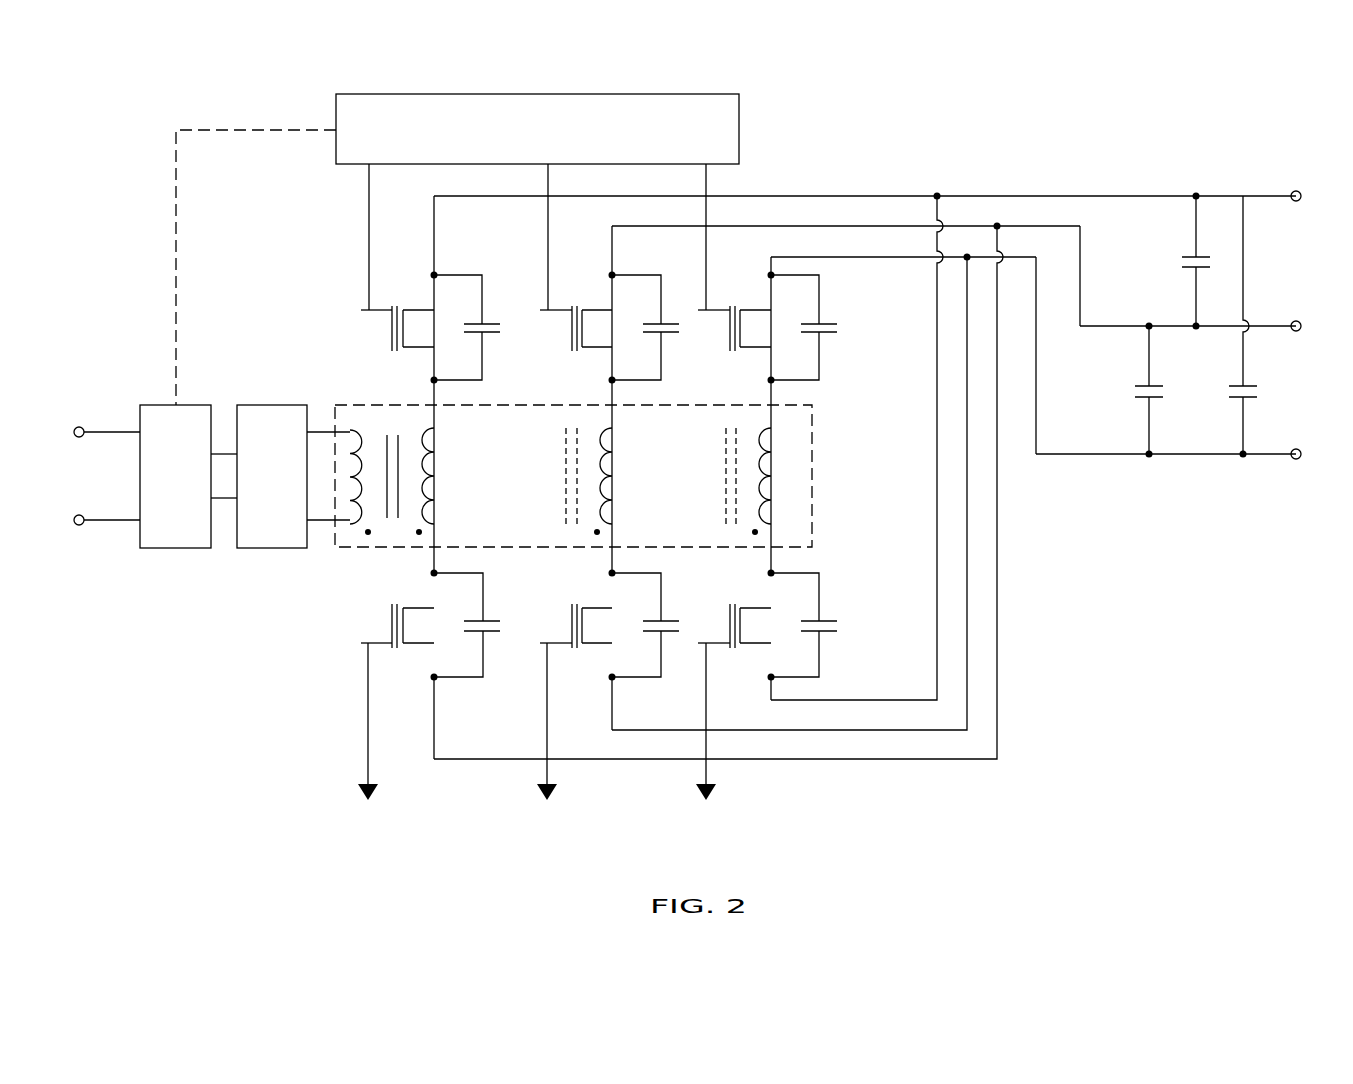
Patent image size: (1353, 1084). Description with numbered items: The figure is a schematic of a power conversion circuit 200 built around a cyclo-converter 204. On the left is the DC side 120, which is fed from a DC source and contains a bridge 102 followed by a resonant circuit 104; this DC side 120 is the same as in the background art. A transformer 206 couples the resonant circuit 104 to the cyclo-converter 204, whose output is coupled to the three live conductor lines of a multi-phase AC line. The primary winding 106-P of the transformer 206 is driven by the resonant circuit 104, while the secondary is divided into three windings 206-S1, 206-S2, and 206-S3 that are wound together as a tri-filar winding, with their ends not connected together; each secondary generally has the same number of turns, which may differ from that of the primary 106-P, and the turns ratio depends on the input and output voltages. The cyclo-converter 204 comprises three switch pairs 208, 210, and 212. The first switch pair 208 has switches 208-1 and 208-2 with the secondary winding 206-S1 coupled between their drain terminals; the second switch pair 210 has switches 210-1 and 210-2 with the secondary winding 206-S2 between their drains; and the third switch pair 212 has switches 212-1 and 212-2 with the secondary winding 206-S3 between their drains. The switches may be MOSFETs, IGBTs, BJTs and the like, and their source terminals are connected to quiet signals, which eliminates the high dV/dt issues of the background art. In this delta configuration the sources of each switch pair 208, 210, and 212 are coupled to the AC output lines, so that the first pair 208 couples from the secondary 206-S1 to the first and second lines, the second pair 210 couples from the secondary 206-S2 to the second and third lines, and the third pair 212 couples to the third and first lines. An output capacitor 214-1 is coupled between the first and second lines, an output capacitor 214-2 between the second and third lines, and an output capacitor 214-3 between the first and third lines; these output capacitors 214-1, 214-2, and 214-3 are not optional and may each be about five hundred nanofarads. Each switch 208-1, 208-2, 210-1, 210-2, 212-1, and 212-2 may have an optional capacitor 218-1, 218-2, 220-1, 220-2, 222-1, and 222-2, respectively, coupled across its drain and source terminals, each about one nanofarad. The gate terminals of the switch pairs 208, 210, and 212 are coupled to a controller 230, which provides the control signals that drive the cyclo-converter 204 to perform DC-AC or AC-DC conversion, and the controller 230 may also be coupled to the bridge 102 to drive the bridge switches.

The bridge 102 is at (192, 485).
The resonant circuit 104 is at (288, 485).
The DC side 120 is at (307, 572).
The primary winding 106-P is at (354, 532).
The power conversion circuit 200 is at (1150, 122).
The cyclo-converter 204 is at (881, 134).
The transformer 206 is at (812, 437).
The secondary winding 206-S1 is at (436, 487).
The secondary winding 206-S2 is at (614, 487).
The secondary winding 206-S3 is at (773, 487).
The switch pair 208 is at (391, 223).
The switch 208-1 is at (397, 303).
The switch 208-2 is at (400, 648).
The switch pair 210 is at (581, 238).
The switch 210-1 is at (577, 303).
The switch 210-2 is at (578, 648).
The switch pair 212 is at (737, 232).
The switch 212-1 is at (737, 303).
The switch 212-2 is at (736, 648).
The output capacitor 214-1 is at (1196, 237).
The output capacitor 214-2 is at (1149, 425).
The output capacitor 214-3 is at (1245, 370).
The capacitor 218-1 is at (483, 373).
The capacitor 218-2 is at (483, 583).
The capacitor 220-1 is at (662, 373).
The capacitor 220-2 is at (662, 583).
The capacitor 222-1 is at (820, 373).
The capacitor 222-2 is at (820, 583).
The controller 230 is at (635, 141).